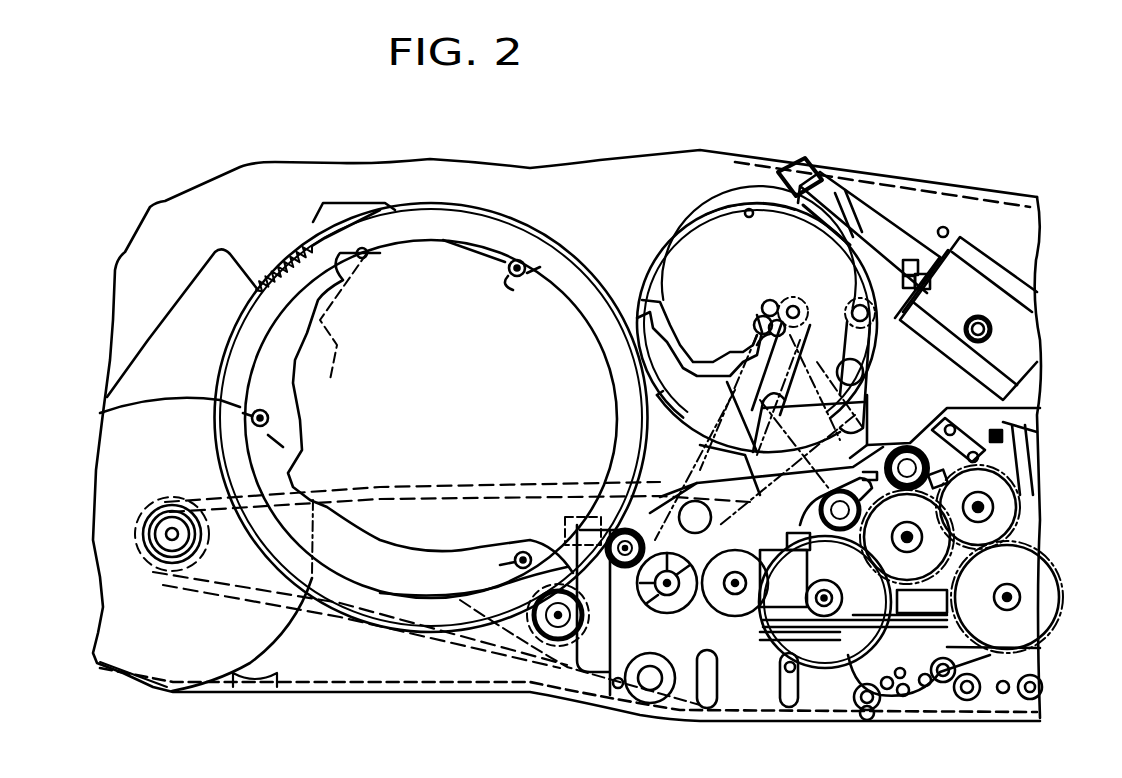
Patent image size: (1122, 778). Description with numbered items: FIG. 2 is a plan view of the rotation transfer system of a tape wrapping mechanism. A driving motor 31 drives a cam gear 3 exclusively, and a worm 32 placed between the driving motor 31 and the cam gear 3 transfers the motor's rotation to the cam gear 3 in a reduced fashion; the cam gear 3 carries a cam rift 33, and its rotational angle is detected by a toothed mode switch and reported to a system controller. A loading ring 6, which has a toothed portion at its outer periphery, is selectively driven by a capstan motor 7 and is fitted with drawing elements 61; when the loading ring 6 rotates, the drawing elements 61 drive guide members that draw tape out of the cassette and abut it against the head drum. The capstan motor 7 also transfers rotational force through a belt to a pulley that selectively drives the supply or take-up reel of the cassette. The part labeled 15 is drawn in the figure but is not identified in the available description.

The cam gear 3 is at (673, 212).
The loading ring 6 is at (530, 227).
The capstan motor 7 is at (155, 548).
The paper guide 15 is at (730, 372).
The driving motor 31 is at (1010, 288).
The worm 32 is at (862, 196).
The cam rift 33 is at (749, 205).
The drawing elements 61 is at (517, 279).